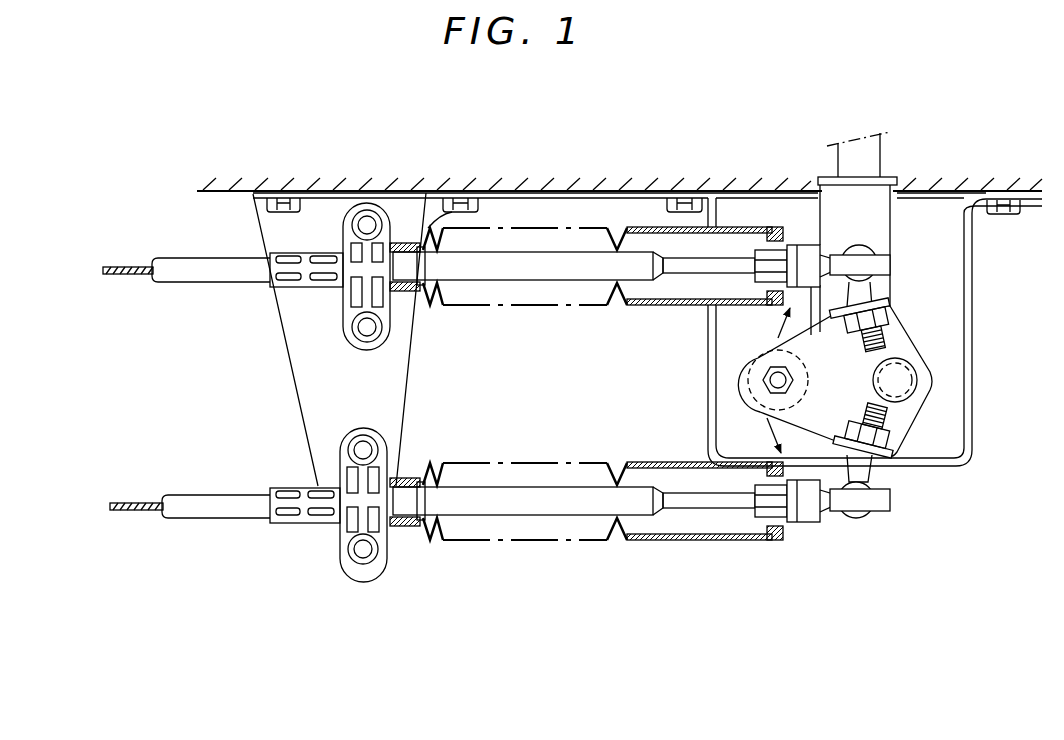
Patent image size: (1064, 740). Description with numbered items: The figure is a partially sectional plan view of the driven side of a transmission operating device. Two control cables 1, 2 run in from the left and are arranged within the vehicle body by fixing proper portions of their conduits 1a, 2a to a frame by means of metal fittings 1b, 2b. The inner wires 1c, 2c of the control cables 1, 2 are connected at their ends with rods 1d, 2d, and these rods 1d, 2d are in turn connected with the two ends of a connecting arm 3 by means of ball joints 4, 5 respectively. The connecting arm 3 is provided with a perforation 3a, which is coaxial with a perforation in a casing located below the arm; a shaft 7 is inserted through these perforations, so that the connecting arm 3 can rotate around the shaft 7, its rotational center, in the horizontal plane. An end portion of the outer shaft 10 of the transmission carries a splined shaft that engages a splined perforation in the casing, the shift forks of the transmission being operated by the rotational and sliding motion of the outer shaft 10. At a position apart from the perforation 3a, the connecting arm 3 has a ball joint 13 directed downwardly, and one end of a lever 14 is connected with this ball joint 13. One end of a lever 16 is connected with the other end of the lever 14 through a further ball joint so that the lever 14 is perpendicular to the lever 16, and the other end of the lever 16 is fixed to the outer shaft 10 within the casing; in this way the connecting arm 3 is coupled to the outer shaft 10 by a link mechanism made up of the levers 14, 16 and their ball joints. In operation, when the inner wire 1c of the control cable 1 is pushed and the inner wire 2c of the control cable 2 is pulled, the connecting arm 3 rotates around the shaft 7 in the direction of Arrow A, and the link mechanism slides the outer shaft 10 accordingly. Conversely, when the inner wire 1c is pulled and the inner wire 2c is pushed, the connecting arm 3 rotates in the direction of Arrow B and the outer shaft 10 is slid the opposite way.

The control cable 1 is at (445, 282).
The conduit 1a is at (198, 266).
The metal fitting 1b is at (348, 293).
The inner wire 1c is at (128, 266).
The rod 1d is at (685, 268).
The control cable 2 is at (471, 529).
The conduit 2a is at (212, 507).
The metal fitting 2b is at (345, 527).
The inner wire 2c is at (133, 507).
The rod 2d is at (720, 503).
The connecting arm 3 is at (897, 333).
The perforation 3a is at (917, 365).
The ball joint 4 is at (872, 268).
The ball joint 5 is at (863, 500).
The shaft 7 is at (900, 387).
The outer shaft 10 is at (867, 163).
The ball joint 13 is at (760, 383).
The lever 14 is at (763, 315).
The lever 16 is at (805, 242).
The Arrow A is at (778, 330).
The Arrow B is at (768, 432).